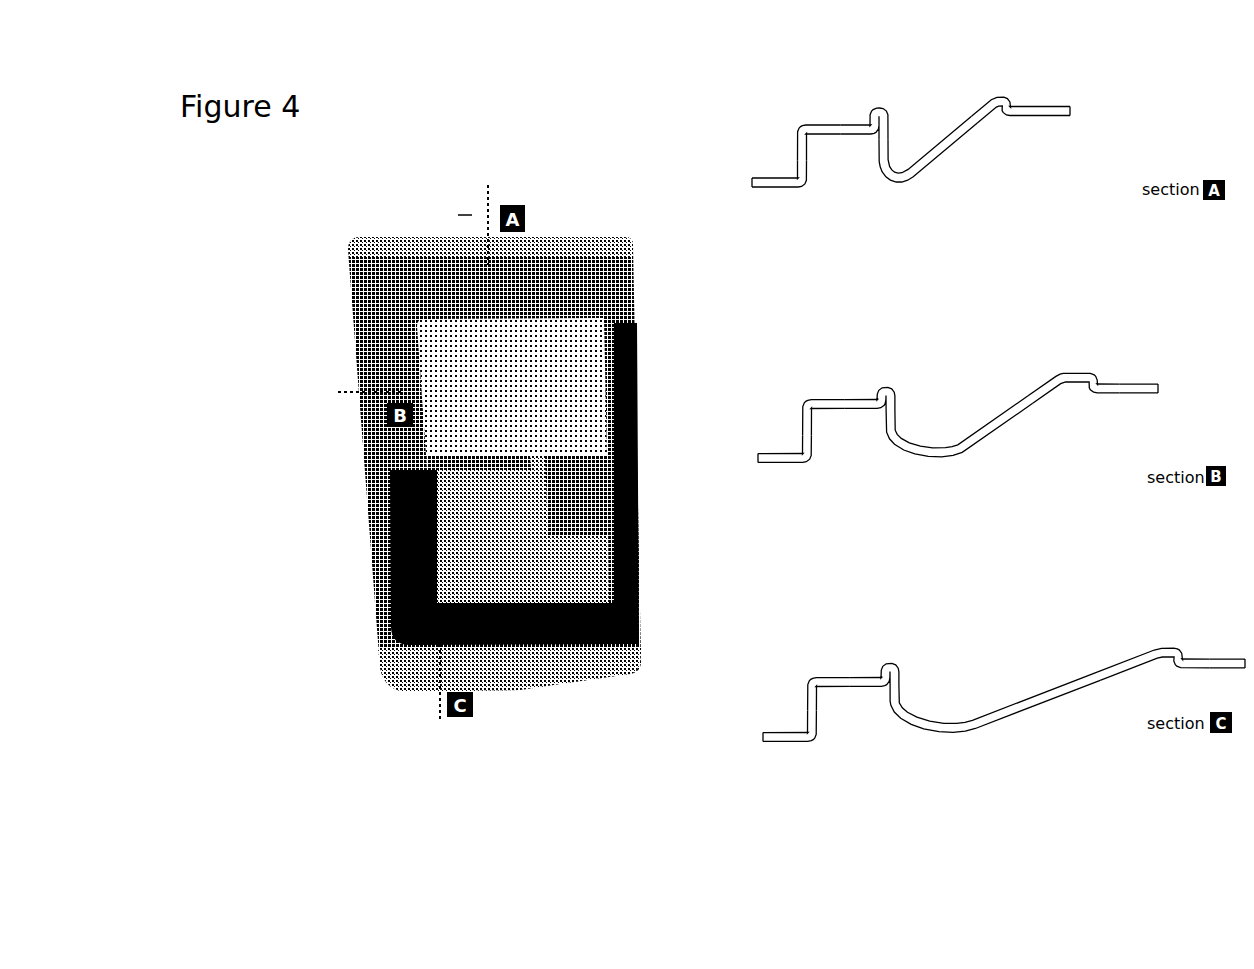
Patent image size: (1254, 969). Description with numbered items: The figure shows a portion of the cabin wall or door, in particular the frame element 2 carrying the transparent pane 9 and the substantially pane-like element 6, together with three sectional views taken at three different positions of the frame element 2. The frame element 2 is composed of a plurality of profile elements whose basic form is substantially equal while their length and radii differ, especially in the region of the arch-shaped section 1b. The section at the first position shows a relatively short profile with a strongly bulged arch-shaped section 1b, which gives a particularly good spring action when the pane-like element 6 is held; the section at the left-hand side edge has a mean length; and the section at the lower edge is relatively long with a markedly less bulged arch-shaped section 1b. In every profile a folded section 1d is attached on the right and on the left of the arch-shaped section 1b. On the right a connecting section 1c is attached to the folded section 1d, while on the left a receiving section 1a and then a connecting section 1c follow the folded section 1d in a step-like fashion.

The frame element 2 is at (392, 250).
The pane-like element 6 is at (425, 297).
The transparent pane 9 is at (445, 450).
The receiving section 1a is at (845, 134).
The arch-shaped section 1b is at (903, 181).
The connecting section 1c is at (773, 187).
The folded section 1d is at (878, 108).